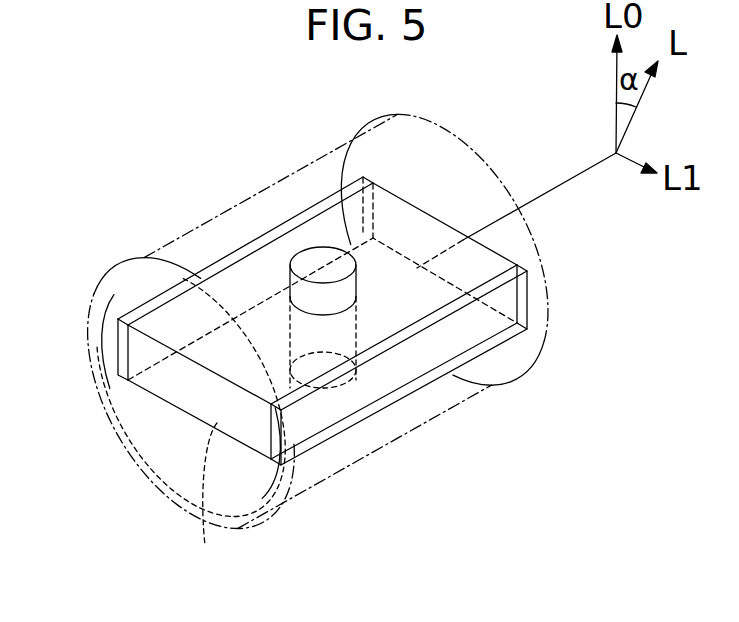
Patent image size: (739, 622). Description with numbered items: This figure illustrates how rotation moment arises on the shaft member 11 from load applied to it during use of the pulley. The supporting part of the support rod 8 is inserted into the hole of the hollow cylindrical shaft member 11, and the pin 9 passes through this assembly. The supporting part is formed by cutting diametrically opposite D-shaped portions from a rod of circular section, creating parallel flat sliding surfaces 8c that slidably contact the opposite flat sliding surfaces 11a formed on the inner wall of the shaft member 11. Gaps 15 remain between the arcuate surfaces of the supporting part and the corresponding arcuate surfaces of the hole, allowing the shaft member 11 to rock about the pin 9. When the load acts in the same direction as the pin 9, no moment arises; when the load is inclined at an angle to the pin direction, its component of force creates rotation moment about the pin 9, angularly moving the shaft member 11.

The support rod 8 is at (187, 392).
The sliding surfaces 8c is at (186, 313).
The pin 9 is at (318, 257).
The shaft member 11 is at (173, 500).
The sliding surfaces 11a is at (97, 313).
The gaps 15 is at (106, 360).